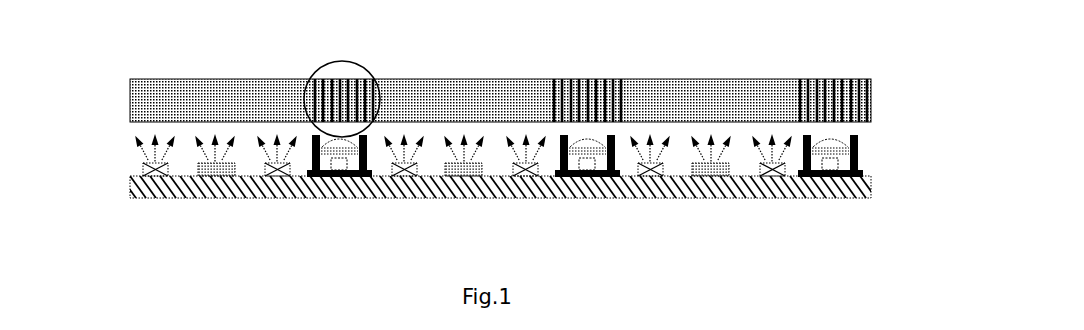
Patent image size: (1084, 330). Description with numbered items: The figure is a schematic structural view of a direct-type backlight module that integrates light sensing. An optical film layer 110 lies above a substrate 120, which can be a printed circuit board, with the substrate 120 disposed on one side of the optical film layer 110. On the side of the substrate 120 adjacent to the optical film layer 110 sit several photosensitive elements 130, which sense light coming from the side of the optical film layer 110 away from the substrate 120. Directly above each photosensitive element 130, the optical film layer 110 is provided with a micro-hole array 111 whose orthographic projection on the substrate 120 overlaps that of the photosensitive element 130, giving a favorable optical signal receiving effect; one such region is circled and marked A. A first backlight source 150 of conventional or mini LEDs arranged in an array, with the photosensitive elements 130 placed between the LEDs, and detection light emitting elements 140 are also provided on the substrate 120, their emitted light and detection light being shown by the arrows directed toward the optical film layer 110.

The optical film layer 110 is at (130, 103).
The micro-hole array 111 is at (605, 103).
The substrate 120 is at (130, 191).
The photosensitive element 130 is at (307, 197).
The detection light emitting element 140 is at (210, 198).
The first backlight source 150 is at (685, 199).
The enlarged region A is at (372, 62).